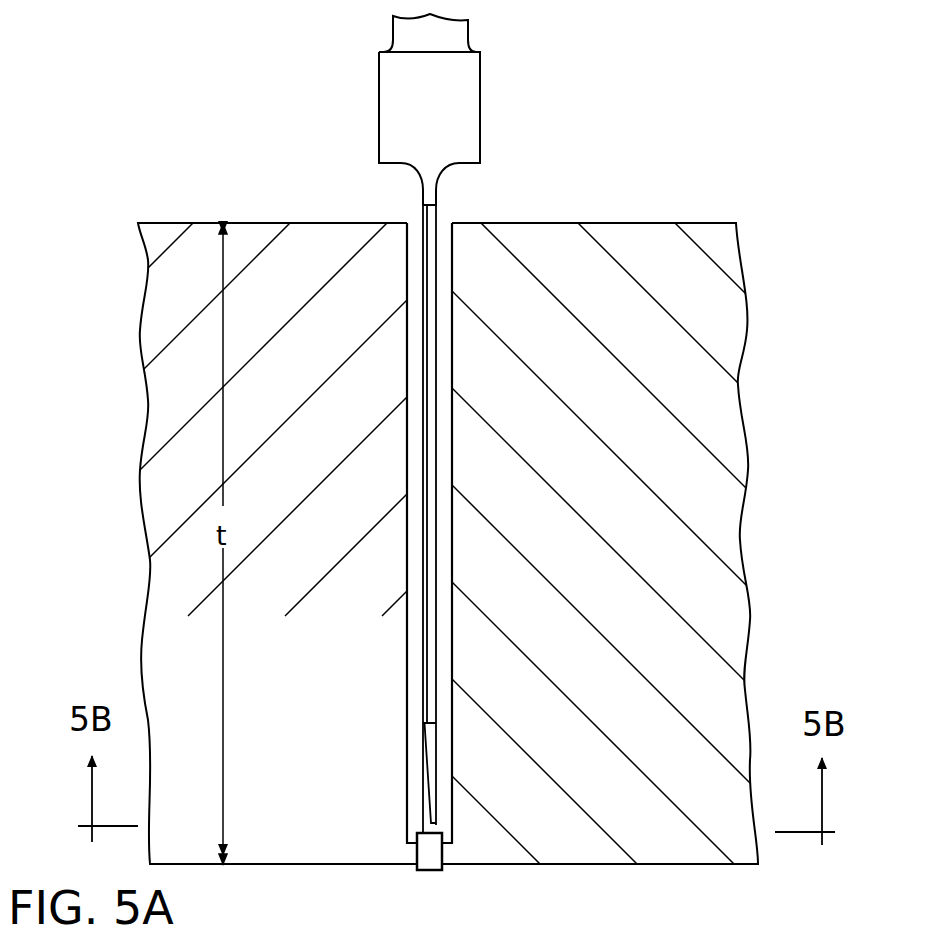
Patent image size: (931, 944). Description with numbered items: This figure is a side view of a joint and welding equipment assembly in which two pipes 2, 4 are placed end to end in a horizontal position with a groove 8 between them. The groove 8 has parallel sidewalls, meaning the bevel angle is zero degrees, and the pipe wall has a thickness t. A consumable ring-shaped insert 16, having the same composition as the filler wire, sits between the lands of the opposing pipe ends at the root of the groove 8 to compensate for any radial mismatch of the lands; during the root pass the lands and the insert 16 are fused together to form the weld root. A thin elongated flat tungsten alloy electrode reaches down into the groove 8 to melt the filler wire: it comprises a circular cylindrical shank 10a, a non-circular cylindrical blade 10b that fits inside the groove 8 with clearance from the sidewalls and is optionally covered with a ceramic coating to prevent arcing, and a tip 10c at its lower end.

The pipe 2 is at (297, 484).
The pipe 4 is at (622, 599).
The groove 8 is at (455, 539).
The circular cylindrical shank 10a is at (467, 118).
The blade 10b is at (428, 588).
The tip 10c is at (407, 842).
The consumable ring-shaped insert 16 is at (433, 853).